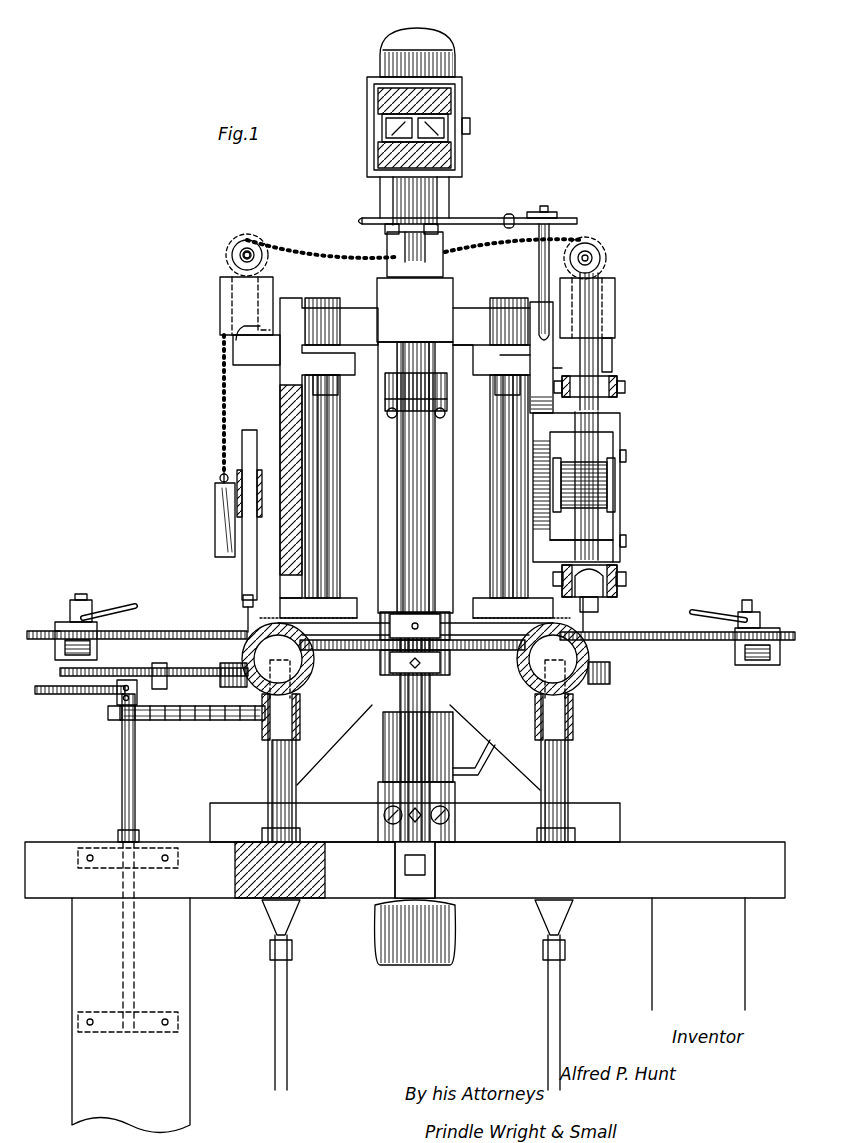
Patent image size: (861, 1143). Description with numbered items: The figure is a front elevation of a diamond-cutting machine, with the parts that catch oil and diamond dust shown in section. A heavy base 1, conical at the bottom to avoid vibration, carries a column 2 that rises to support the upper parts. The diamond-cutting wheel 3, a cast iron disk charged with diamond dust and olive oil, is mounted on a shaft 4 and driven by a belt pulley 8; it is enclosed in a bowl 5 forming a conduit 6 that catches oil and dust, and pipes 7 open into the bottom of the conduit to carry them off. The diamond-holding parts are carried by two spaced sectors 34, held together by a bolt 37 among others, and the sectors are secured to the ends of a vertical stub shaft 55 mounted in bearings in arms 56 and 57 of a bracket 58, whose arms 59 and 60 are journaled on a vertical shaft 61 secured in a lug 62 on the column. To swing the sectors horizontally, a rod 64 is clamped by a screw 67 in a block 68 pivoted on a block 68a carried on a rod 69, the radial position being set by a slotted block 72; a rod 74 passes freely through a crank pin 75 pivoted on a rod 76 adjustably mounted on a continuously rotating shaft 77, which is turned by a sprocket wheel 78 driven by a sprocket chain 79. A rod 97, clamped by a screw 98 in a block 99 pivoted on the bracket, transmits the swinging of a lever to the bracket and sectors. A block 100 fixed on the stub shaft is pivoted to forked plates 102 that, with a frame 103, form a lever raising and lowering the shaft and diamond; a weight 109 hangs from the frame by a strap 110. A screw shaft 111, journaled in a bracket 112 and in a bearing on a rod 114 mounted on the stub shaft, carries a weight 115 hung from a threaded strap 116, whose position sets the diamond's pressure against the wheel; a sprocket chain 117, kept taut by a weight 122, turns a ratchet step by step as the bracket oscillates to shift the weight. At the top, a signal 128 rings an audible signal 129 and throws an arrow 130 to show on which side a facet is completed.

The base 1 is at (495, 775).
The column 2 is at (440, 500).
The diamond-cutting wheel 3 is at (500, 652).
The shaft 4 is at (410, 485).
The bowl 5 is at (572, 632).
The conduit 6 is at (575, 655).
The pipes 7 is at (268, 768).
The belt pulley 8 is at (456, 930).
The sectors 34 is at (617, 386).
The bolt 37 is at (618, 585).
The vertical stub shaft 55 is at (606, 527).
The arm 56 is at (595, 420).
The arm 57 is at (602, 550).
The bracket 58 is at (292, 298).
The arm 59 is at (340, 378).
The arm 60 is at (335, 600).
The vertical shaft 61 is at (336, 460).
The lug 62 is at (462, 308).
The rod 64 is at (110, 605).
The screw 67 is at (748, 600).
The block 68 is at (760, 614).
The block 68a is at (80, 645).
The rod 69 is at (692, 642).
The block 72 is at (57, 630).
The rod 74 is at (72, 696).
The crank pin 75 is at (165, 670).
The rod 76 is at (92, 695).
The shaft 77 is at (133, 790).
The sprocket wheel 78 is at (116, 722).
The sprocket chain 79 is at (201, 722).
The rod 97 is at (466, 217).
The screw 98 is at (510, 214).
The block 99 is at (548, 214).
The block 100 is at (606, 472).
The forked plates 102 is at (592, 462).
The frame 103 is at (246, 568).
The weight 109 is at (240, 686).
The strap 110 is at (243, 603).
The screw shaft 111 is at (238, 262).
The bracket 112 is at (262, 365).
The rod 114 is at (600, 322).
The weight 115 is at (220, 298).
The strap 116 is at (238, 248).
The sprocket chain 117 is at (335, 248).
The weight 122 is at (215, 515).
The signal 128 is at (462, 105).
The audible signal 129 is at (445, 40).
The arrow 130 is at (435, 135).